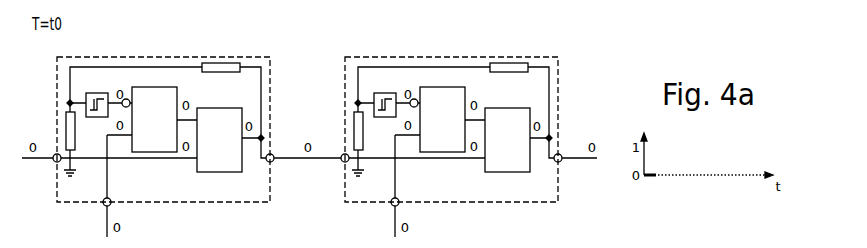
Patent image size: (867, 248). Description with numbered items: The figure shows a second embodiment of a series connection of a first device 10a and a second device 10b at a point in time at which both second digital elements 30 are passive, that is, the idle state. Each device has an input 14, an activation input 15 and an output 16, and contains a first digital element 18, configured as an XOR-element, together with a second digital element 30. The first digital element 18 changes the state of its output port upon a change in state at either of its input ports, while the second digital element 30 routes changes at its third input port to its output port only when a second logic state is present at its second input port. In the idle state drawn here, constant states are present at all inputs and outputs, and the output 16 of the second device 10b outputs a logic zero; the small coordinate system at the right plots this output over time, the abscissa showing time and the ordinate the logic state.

The first device 10a is at (271, 90).
The second device 10b is at (559, 90).
The input 14 is at (53, 162).
The activation input 15 is at (103, 205).
The output 16 is at (273, 162).
The first digital element 18 is at (234, 172).
The second digital element 30 is at (156, 87).